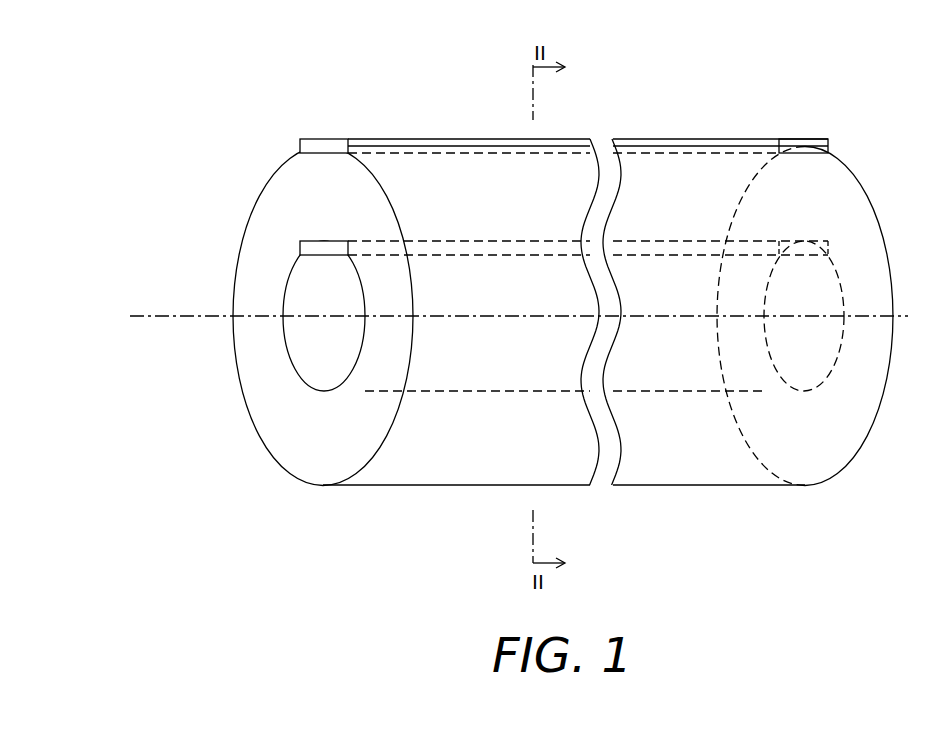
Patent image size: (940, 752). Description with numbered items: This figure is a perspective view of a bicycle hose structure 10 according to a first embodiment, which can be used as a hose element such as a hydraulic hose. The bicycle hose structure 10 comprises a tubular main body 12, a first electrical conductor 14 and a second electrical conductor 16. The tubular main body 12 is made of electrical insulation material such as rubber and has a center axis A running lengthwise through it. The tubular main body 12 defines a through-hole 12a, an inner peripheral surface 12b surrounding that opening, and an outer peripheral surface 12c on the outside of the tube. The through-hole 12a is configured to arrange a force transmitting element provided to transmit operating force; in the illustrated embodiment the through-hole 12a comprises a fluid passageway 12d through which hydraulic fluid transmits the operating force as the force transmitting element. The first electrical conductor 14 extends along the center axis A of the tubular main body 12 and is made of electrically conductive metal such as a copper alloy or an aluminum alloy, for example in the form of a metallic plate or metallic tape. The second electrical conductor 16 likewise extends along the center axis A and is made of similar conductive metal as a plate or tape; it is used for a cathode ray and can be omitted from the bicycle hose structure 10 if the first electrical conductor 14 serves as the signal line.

The bicycle hose structure 10 is at (538, 263).
The tubular main body 12 is at (538, 284).
The through-hole 12a is at (306, 330).
The inner peripheral surface 12b is at (320, 277).
The outer peripheral surface 12c is at (459, 188).
The fluid passageway 12d is at (275, 316).
The first electrical conductor 14 is at (320, 248).
The second electrical conductor 16 is at (328, 147).
The center axis A is at (178, 315).